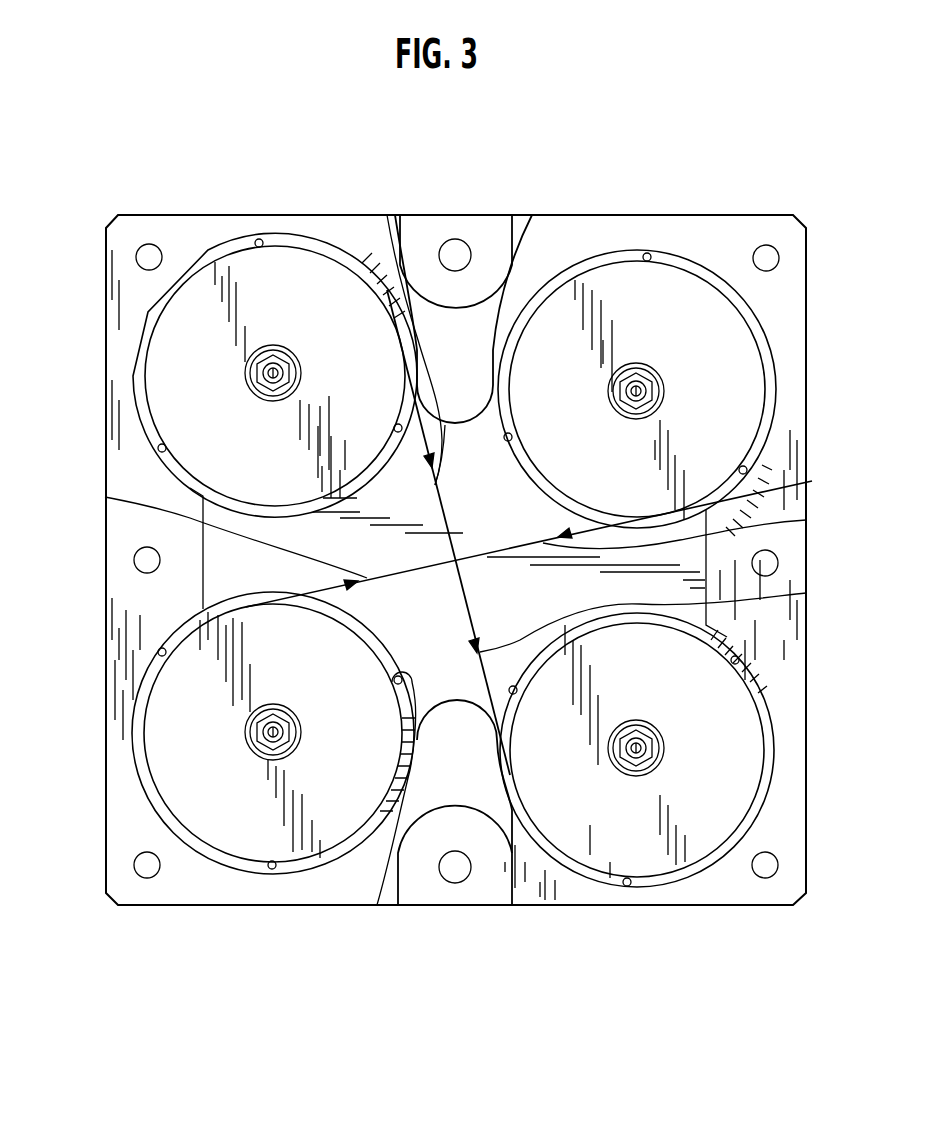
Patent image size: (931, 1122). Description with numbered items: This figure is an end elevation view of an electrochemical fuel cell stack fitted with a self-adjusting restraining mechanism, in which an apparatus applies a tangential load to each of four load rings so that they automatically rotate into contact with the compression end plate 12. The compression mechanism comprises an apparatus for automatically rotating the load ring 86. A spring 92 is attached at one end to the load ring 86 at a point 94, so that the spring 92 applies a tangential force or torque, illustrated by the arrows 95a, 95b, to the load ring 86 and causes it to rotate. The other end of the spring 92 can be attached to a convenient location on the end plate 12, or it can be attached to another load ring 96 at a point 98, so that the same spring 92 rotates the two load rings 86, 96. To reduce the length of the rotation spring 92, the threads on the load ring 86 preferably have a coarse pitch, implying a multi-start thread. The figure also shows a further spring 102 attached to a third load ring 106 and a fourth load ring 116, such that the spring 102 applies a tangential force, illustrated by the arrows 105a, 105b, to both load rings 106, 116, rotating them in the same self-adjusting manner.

The end plate 12 is at (140, 527).
The load ring 86 is at (167, 468).
The point 94 is at (145, 411).
The arrow 95a is at (387, 215).
The arrow 95b is at (806, 593).
The spring 92 is at (532, 215).
The fourth load ring 116 is at (437, 487).
The spring 102 is at (806, 520).
The arrow 105a is at (105, 497).
The arrow 105b is at (554, 534).
The load ring 96 is at (708, 627).
The point 98 is at (735, 641).
The third load ring 106 is at (378, 905).